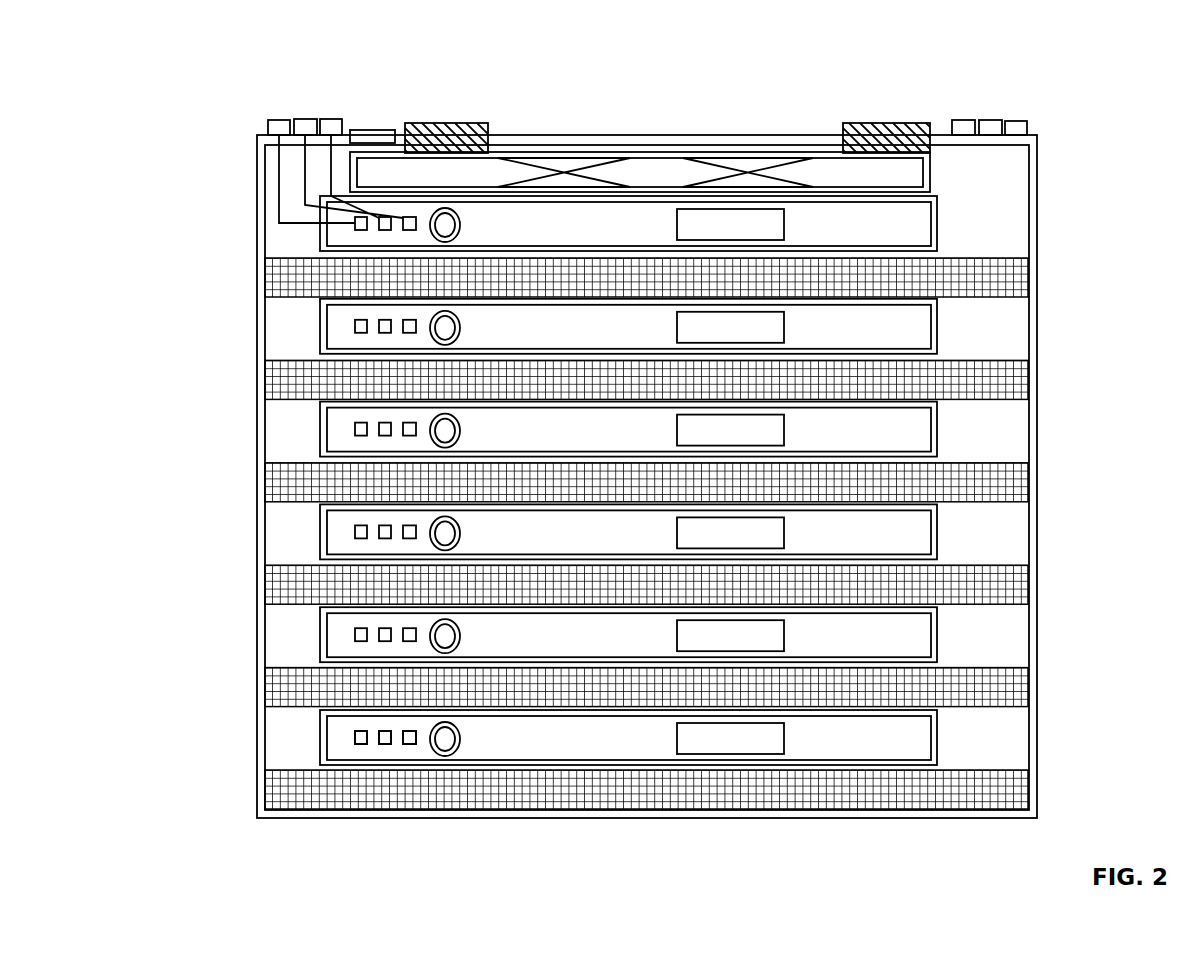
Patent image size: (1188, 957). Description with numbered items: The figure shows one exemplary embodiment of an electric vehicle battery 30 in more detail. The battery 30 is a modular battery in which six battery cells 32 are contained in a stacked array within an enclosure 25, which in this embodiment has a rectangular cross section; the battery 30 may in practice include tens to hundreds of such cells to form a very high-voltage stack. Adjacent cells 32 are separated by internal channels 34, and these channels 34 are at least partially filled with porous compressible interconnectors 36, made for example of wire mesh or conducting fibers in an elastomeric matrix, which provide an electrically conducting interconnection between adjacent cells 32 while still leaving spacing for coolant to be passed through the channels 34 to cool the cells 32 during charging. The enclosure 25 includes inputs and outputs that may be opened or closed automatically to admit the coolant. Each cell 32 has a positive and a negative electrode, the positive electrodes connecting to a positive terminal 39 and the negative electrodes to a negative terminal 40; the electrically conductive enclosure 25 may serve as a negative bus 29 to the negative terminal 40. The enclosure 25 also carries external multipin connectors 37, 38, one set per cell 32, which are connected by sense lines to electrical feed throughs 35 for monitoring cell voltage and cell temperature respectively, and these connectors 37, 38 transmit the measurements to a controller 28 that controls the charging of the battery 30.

The enclosure 25 is at (257, 750).
The controller 28 is at (890, 193).
The negative bus 29 is at (757, 135).
The electric vehicle battery 30 is at (232, 58).
The battery cells 32 is at (1045, 206).
The internal channels 34 is at (247, 277).
The electrical feed throughs 35 is at (361, 745).
The porous compressible interconnectors 36 is at (1016, 280).
The multipin connector 37 is at (266, 124).
The multipin connector 38 is at (342, 118).
The positive terminal 39 is at (453, 123).
The negative terminal 40 is at (897, 123).